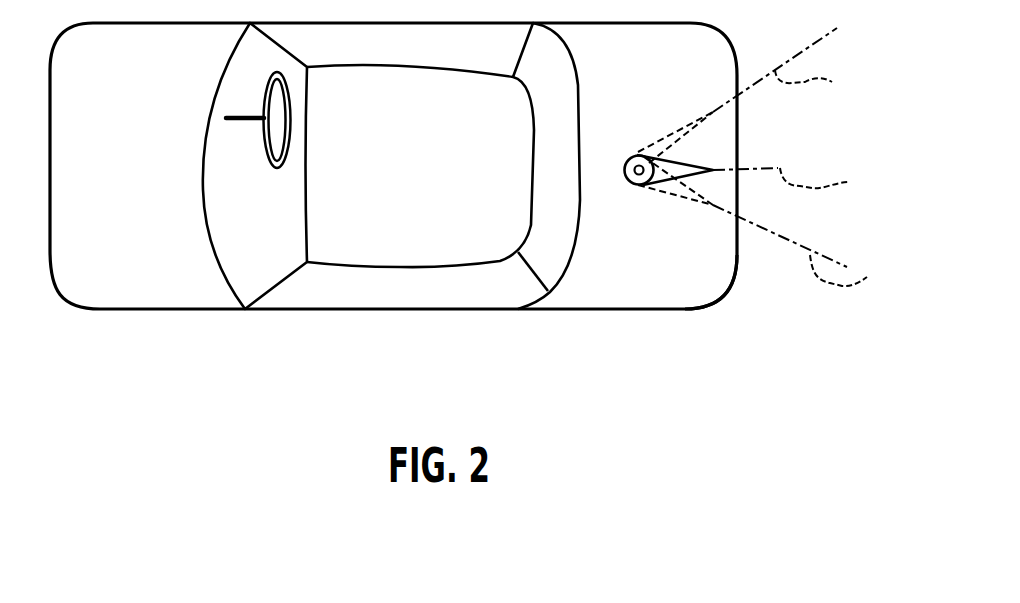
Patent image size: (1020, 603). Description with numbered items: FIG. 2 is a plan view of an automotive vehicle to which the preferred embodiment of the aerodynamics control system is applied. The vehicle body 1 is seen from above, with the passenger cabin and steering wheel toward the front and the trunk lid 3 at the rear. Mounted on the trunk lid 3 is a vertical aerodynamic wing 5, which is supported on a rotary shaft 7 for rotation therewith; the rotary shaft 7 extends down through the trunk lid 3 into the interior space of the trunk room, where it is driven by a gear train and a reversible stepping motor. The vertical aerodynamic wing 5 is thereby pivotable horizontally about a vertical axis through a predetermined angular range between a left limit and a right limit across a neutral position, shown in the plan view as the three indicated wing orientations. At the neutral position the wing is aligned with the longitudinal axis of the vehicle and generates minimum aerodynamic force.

The vehicle body 1 is at (463, 298).
The trunk lid 3 is at (625, 290).
The vertical aerodynamic wing 5 is at (700, 162).
The rotary shaft 7 is at (637, 154).